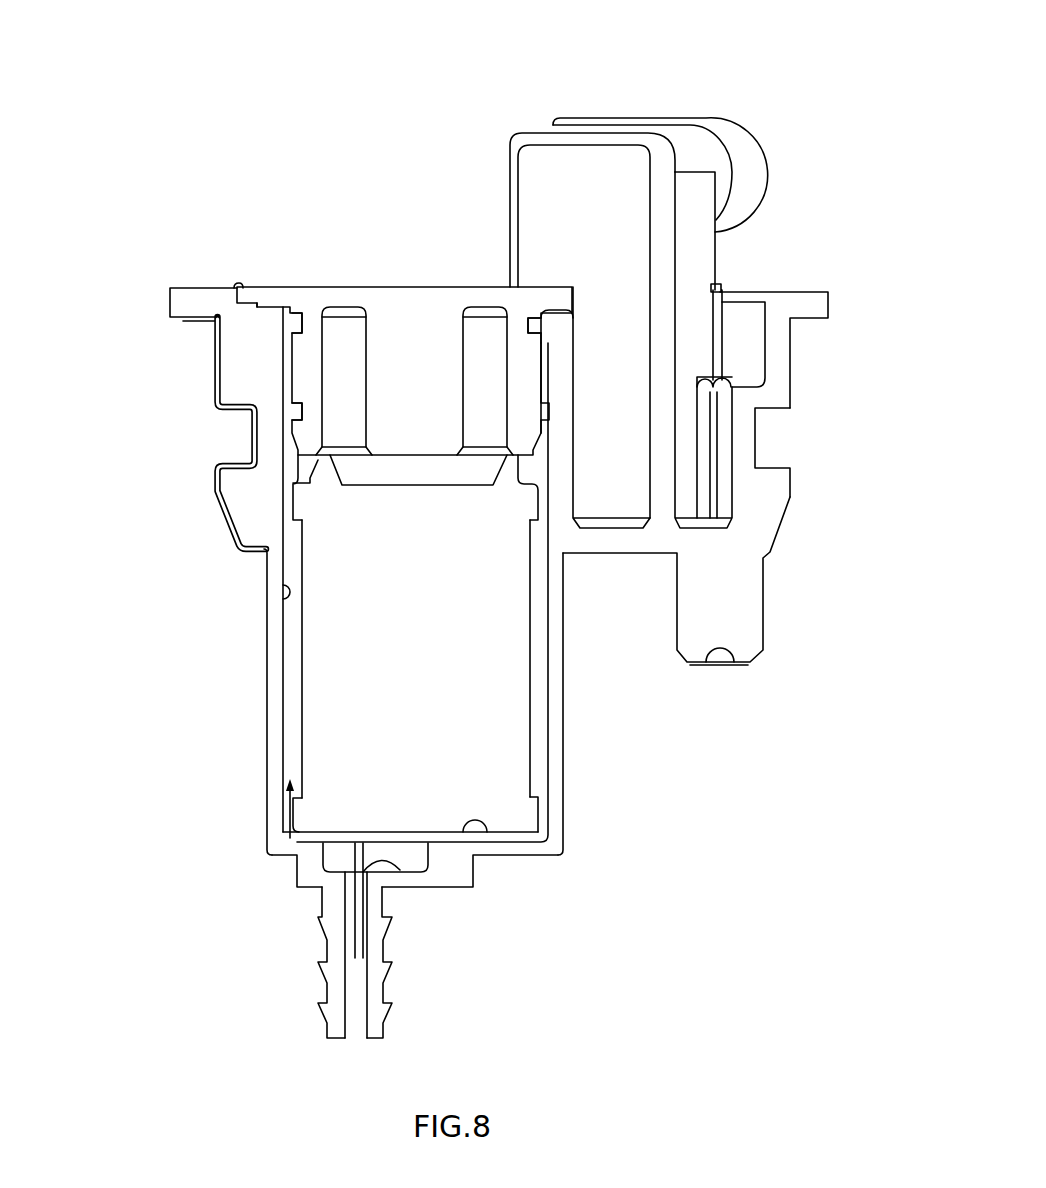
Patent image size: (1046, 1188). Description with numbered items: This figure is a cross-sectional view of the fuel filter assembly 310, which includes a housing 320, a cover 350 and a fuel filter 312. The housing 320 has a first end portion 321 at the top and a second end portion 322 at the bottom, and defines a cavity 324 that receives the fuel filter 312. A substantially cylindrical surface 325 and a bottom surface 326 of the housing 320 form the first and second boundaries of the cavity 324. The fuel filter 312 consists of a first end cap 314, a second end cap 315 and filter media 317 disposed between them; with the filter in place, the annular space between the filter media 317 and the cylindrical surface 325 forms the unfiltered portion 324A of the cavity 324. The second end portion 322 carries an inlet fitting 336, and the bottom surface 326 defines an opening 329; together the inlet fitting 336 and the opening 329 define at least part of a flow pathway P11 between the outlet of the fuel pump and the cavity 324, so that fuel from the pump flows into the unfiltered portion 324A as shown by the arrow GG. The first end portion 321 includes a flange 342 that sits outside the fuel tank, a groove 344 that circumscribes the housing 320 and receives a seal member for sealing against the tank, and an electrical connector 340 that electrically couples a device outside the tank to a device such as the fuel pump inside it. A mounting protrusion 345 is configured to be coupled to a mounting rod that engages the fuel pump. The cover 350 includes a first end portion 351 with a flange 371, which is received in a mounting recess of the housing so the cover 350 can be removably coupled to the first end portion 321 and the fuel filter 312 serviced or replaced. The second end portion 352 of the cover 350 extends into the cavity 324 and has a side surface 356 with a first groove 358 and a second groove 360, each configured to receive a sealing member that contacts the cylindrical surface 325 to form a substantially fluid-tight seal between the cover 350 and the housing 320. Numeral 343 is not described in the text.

The fuel filter assembly 310 is at (93, 152).
The fuel filter 312 is at (505, 716).
The first end cap 314 is at (512, 493).
The second end cap 315 is at (520, 820).
The filter media 317 is at (430, 740).
The housing 320 is at (265, 670).
The first end portion 321 is at (233, 386).
The second end portion 322 is at (268, 858).
The cavity 324 is at (295, 690).
The unfiltered portion 324A is at (295, 720).
The cylindrical surface 325 is at (283, 594).
The bottom surface 326 is at (455, 835).
The opening 329 is at (363, 865).
The inlet fitting 336 is at (378, 990).
The electrical connector 340 is at (672, 116).
The flange 342 is at (190, 290).
The mounting bracket 343 is at (792, 365).
The groove 344 is at (780, 440).
The mounting protrusion 345 is at (743, 637).
The cover 350 is at (398, 310).
The first end portion 351 is at (446, 290).
The second end portion 352 is at (403, 438).
The side surface 356 is at (303, 367).
The first groove 358 is at (537, 327).
The second groove 360 is at (295, 410).
The flange 371 is at (270, 290).
The arrow GG is at (286, 796).
The flow pathway P11 is at (355, 920).